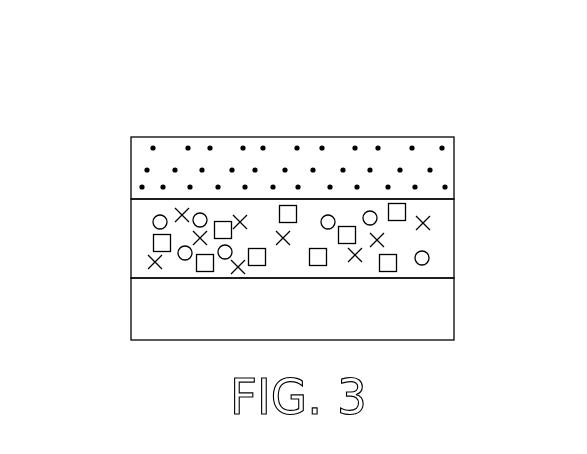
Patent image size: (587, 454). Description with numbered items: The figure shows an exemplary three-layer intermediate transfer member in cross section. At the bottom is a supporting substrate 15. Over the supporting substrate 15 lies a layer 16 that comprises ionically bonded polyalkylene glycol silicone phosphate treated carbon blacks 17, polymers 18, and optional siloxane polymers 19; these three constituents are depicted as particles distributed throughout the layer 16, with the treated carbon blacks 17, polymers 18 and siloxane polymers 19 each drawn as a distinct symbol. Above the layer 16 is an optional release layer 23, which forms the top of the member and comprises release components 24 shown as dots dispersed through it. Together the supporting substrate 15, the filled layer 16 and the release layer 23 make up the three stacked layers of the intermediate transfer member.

The supporting substrate 15 is at (131, 305).
The layer 16 is at (132, 233).
The ionically bonded polyalkylene glycol silicone phosphate treated carbon blacks 17 is at (430, 258).
The polymers 18 is at (156, 245).
The optional siloxane polymers 19 is at (431, 222).
The optional release layer 23 is at (454, 163).
The release components 24 is at (188, 148).